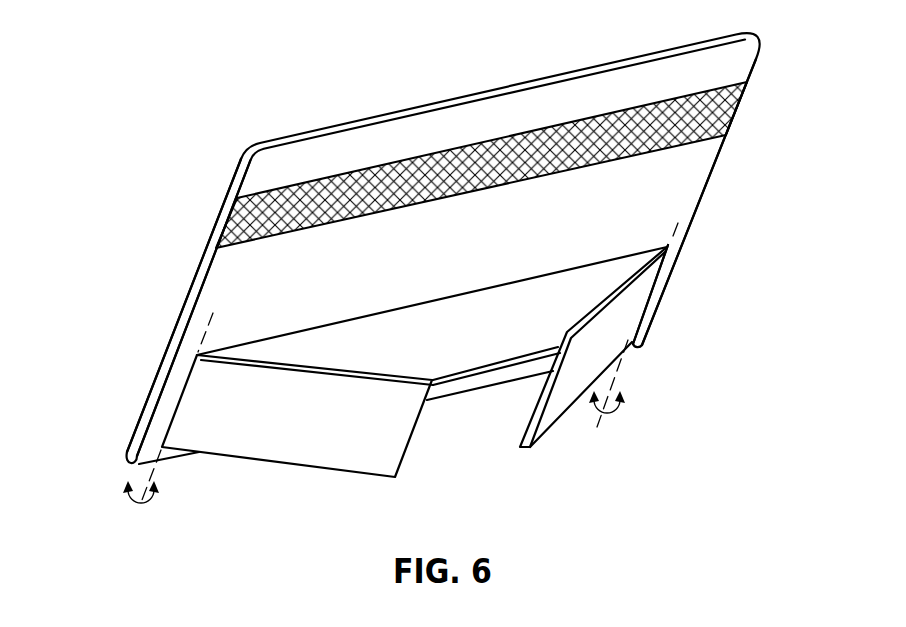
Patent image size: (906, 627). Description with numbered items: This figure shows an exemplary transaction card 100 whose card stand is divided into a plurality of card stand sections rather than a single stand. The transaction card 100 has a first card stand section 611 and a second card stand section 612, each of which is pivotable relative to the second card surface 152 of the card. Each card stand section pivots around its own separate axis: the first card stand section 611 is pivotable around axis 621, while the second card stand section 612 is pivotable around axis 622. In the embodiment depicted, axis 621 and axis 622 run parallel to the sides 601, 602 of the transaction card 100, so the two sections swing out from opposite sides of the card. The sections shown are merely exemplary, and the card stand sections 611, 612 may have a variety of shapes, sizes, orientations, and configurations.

The transaction card 100 is at (227, 148).
The second card surface 152 is at (670, 173).
The side of transaction card 601 is at (185, 325).
The side of transaction card 602 is at (678, 262).
The first card stand section 611 is at (333, 468).
The second card stand section 612 is at (537, 438).
The axis 621 is at (133, 511).
The axis 622 is at (618, 364).